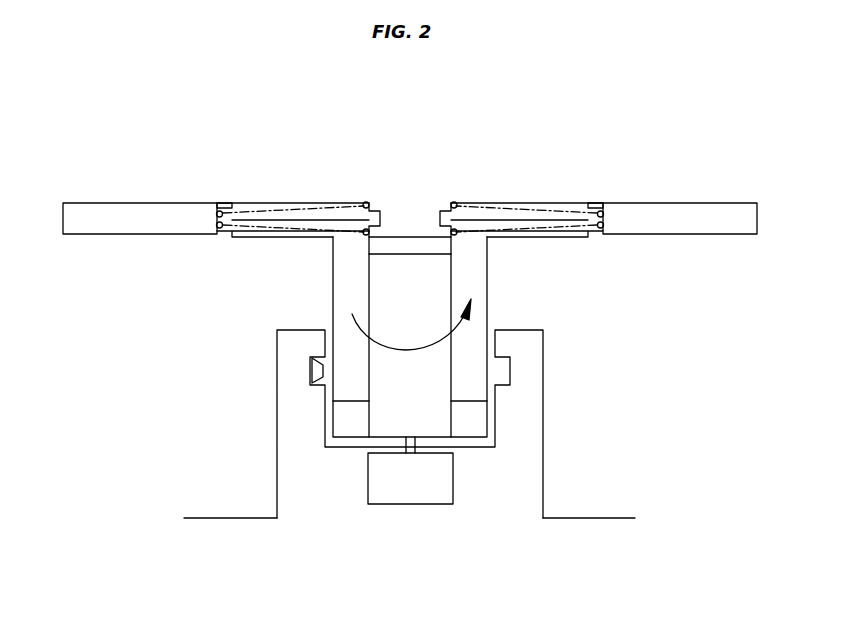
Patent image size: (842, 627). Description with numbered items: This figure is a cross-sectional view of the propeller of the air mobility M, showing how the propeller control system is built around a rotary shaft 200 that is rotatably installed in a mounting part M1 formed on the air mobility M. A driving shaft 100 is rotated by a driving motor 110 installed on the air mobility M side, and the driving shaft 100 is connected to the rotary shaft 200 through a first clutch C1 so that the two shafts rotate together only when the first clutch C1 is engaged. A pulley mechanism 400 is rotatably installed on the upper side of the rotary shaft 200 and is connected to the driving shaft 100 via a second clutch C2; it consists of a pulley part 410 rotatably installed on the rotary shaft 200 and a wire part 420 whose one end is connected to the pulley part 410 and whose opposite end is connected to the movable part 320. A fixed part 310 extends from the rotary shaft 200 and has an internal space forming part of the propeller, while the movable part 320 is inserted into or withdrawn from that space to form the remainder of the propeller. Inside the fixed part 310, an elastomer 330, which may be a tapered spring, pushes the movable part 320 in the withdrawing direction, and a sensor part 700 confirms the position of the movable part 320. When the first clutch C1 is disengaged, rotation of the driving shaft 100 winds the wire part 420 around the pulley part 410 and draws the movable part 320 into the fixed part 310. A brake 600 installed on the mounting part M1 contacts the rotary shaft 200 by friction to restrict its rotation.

The driving shaft 100 is at (425, 290).
The driving motor 110 is at (409, 488).
The rotary shaft 200 is at (340, 289).
The fixed part 310 is at (258, 203).
The movable part 320 is at (127, 218).
The elastomer 330 is at (271, 229).
The pulley mechanism 400 is at (379, 164).
The pulley part 410 is at (392, 218).
The wire part 420 is at (307, 218).
The brake 600 is at (311, 371).
The sensor part 700 is at (225, 204).
The first clutch C1 is at (478, 417).
The second clutch C2 is at (421, 248).
The air mobility M is at (590, 518).
The mounting part M1 is at (527, 366).